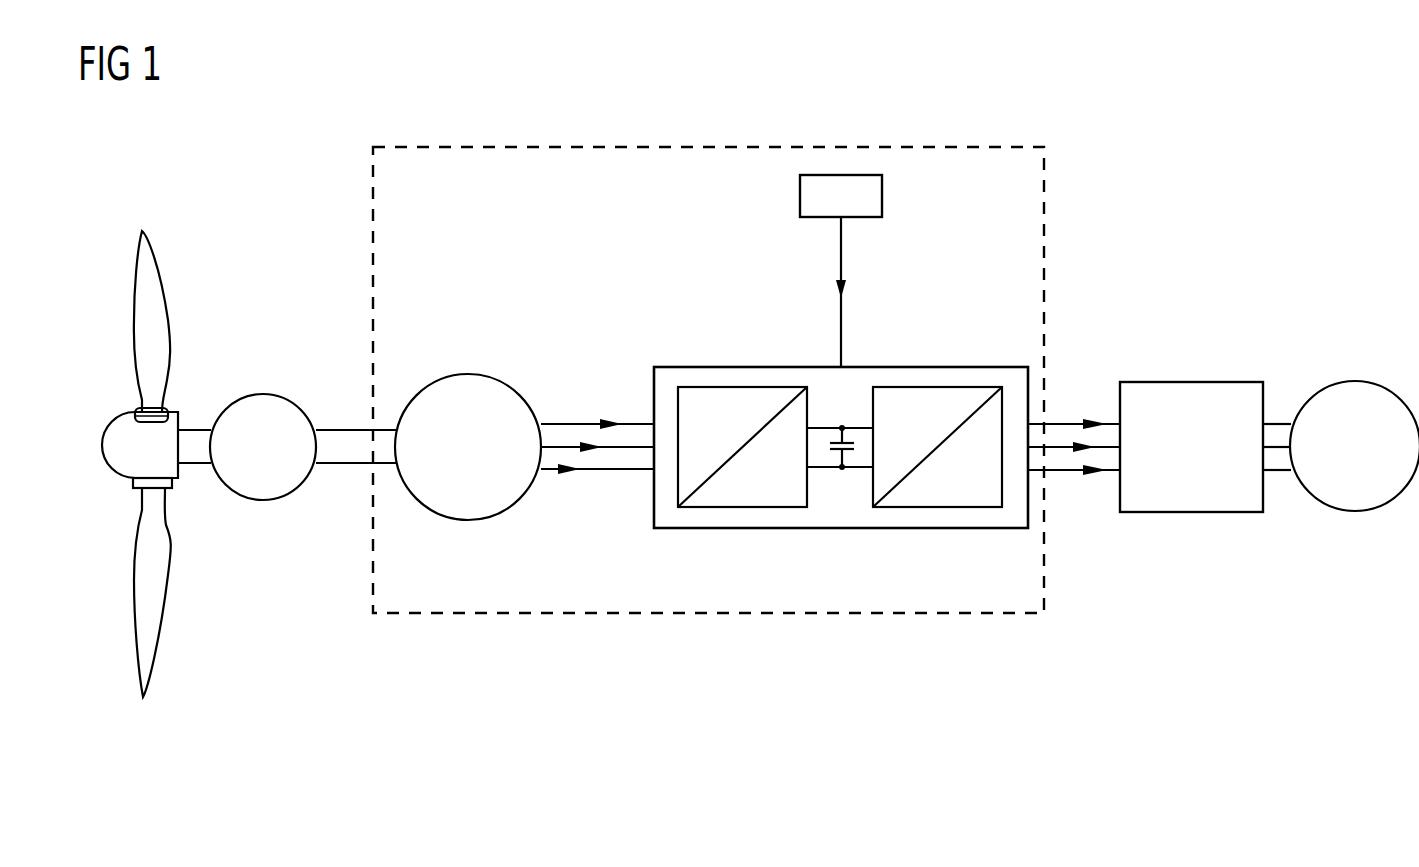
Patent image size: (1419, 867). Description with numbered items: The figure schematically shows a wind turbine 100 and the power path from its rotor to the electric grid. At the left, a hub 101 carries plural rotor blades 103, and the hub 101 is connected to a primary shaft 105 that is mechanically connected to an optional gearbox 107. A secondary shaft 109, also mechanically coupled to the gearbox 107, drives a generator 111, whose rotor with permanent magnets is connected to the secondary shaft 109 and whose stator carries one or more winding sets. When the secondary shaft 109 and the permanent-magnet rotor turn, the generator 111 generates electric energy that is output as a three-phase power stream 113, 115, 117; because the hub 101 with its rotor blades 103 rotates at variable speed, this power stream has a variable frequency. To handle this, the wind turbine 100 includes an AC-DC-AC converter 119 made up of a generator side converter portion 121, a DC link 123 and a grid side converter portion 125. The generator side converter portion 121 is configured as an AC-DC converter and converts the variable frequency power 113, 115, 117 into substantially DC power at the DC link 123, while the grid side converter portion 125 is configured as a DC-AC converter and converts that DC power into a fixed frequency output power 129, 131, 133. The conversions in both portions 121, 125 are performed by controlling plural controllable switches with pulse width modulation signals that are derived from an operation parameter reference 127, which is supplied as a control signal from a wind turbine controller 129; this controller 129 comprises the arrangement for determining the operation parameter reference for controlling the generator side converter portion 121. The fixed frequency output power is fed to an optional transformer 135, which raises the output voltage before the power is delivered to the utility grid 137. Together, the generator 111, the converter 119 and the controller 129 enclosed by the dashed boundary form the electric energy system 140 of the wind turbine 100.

The wind turbine 100 is at (1257, 108).
The hub 101 is at (122, 412).
The rotor blades 103 is at (168, 300).
The primary shaft 105 is at (196, 440).
The gearbox 107 is at (270, 393).
The secondary shaft 109 is at (333, 436).
The generator 111 is at (470, 372).
The three-phase power stream 113 is at (608, 419).
The three-phase power stream 115 is at (594, 450).
The three-phase power stream 117 is at (568, 473).
The AC-DC-AC converter 119 is at (841, 530).
The generator side converter portion 121 is at (743, 386).
The DC link 123 is at (851, 408).
The grid side converter portion 125 is at (940, 386).
The operation parameter reference 127 is at (836, 291).
The wind turbine controller 129 is at (883, 195).
The fixed frequency output power 131 is at (1081, 441).
The fixed frequency output power 133 is at (1097, 480).
The transformer 135 is at (1192, 381).
The utility grid 137 is at (1357, 380).
The electric energy system 140 is at (707, 146).